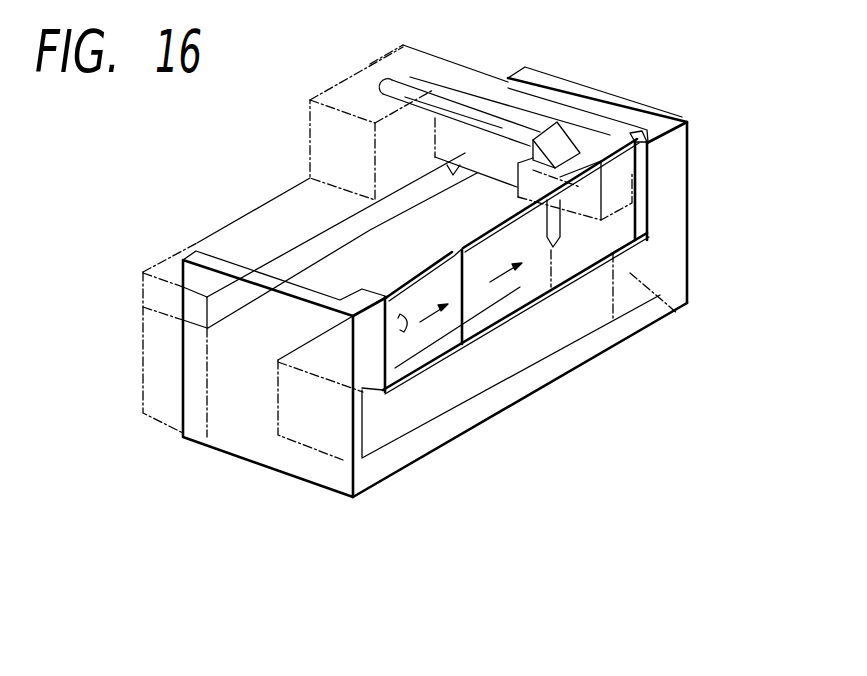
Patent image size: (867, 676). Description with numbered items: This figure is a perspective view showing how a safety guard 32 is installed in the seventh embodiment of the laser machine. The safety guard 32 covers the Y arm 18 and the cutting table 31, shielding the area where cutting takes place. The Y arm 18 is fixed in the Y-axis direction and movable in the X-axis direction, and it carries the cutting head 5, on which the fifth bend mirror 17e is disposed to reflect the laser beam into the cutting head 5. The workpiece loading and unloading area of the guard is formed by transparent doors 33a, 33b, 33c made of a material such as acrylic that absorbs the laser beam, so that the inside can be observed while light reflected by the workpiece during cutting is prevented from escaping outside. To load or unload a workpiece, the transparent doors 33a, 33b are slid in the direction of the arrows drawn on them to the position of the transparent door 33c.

The cutting head 5 is at (675, 298).
The fifth bend mirror 17e is at (558, 147).
The Y arm 18 is at (450, 68).
The cutting table 31 is at (440, 397).
The safety guard 32 is at (670, 217).
The transparent door 33a is at (450, 350).
The transparent door 33b is at (520, 283).
The transparent door 33c is at (640, 246).